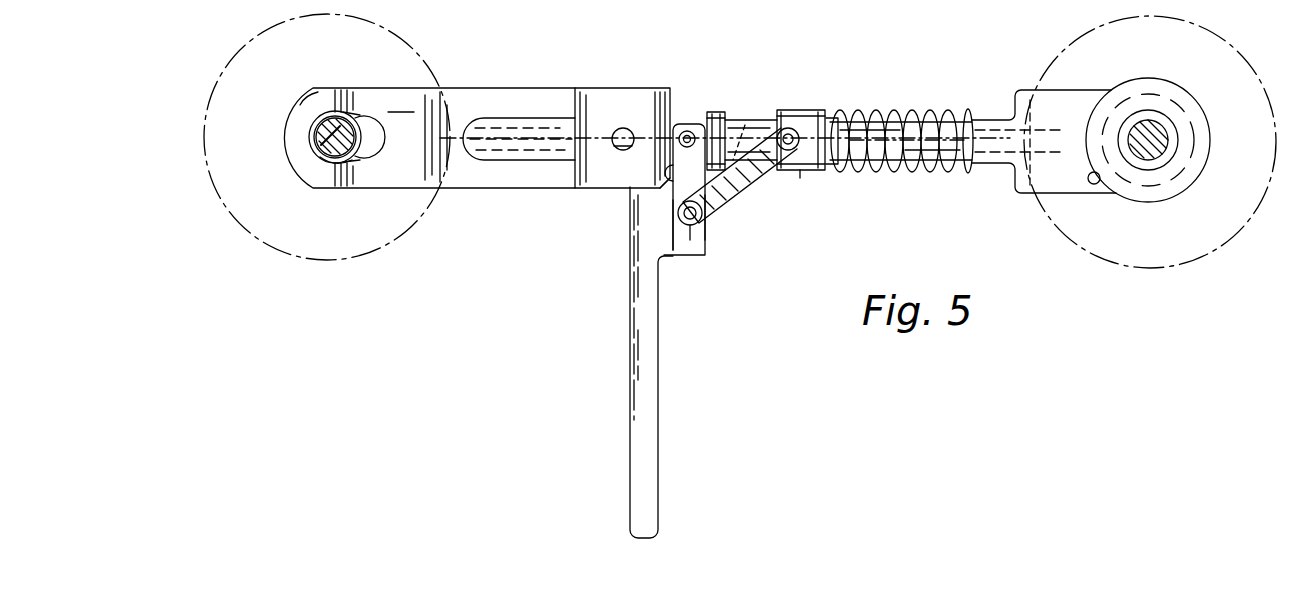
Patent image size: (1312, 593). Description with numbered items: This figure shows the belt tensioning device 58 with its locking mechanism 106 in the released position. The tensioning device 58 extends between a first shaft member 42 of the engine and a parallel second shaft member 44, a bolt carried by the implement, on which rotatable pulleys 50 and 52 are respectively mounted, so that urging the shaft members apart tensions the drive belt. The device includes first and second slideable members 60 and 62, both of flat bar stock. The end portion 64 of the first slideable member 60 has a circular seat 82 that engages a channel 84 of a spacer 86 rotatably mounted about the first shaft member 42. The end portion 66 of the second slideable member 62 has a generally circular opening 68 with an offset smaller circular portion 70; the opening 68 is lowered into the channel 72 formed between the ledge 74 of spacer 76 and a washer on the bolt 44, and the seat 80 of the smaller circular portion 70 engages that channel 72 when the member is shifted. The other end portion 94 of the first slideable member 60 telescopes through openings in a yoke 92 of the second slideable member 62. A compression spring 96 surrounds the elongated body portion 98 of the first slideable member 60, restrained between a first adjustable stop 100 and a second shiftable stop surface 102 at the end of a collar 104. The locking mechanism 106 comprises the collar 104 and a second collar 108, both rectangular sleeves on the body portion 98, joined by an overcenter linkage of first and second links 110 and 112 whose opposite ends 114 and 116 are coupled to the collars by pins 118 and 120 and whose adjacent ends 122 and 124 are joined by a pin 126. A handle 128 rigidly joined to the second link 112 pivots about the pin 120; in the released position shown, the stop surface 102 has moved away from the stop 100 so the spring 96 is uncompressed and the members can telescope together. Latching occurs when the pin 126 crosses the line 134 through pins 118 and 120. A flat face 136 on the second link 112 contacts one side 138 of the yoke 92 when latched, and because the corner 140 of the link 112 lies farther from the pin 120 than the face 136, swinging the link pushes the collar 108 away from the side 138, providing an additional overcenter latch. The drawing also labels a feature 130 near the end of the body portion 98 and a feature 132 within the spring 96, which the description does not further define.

The first shaft member 42 is at (1160, 130).
The second shaft member 44 is at (320, 128).
The pulley 50 is at (1216, 32).
The pulley 52 is at (258, 43).
The tensioning device 58 is at (525, 283).
The first slideable member 60 is at (980, 188).
The second slideable member 62 is at (482, 86).
The end portion 64 is at (1070, 96).
The end portion 66 is at (401, 102).
The opening 68 is at (351, 106).
The smaller circular portion 70 is at (392, 152).
The channel 72 is at (324, 161).
The ledge 74 is at (356, 163).
The spacer 76 is at (347, 163).
The seat 80 is at (368, 118).
The seat 82 is at (1093, 186).
The channel 84 is at (1128, 200).
The spacer 86 is at (1176, 197).
The yoke 92 is at (593, 87).
The end portion 94 is at (490, 161).
The compression spring 96 is at (900, 110).
The elongated body portion 98 is at (840, 170).
The first adjustable stop 100 is at (968, 109).
The second shiftable stop surface 102 is at (825, 118).
The collar 104 is at (813, 175).
The locking mechanism 106 is at (738, 229).
The collar 108 is at (735, 120).
The first link 110 is at (760, 190).
The second link 112 is at (672, 196).
The opposite end 114 is at (798, 124).
The opposite end 116 is at (716, 114).
The pin 118 is at (786, 152).
The pin 120 is at (683, 130).
The adjacent end 122 is at (713, 203).
The adjacent end 124 is at (692, 230).
The pin 126 is at (682, 221).
The handle 128 is at (659, 490).
The rod end 130 is at (985, 165).
The rod axis 132 is at (870, 165).
The line 134 is at (748, 118).
The face 136 is at (687, 129).
The side 138 is at (660, 192).
The corner 140 is at (678, 137).